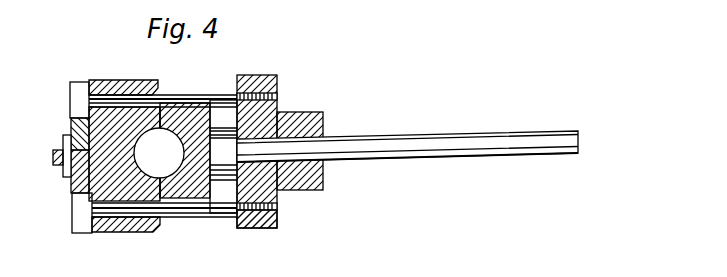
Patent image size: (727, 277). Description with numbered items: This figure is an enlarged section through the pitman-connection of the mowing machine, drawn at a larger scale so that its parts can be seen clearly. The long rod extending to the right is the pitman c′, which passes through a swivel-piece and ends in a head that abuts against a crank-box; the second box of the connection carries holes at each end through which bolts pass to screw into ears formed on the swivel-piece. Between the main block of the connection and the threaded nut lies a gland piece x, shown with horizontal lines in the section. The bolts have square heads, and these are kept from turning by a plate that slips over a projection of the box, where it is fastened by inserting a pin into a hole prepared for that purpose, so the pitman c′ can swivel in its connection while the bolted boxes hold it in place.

The pitman c′ is at (400, 139).
The gland piece x is at (223, 156).